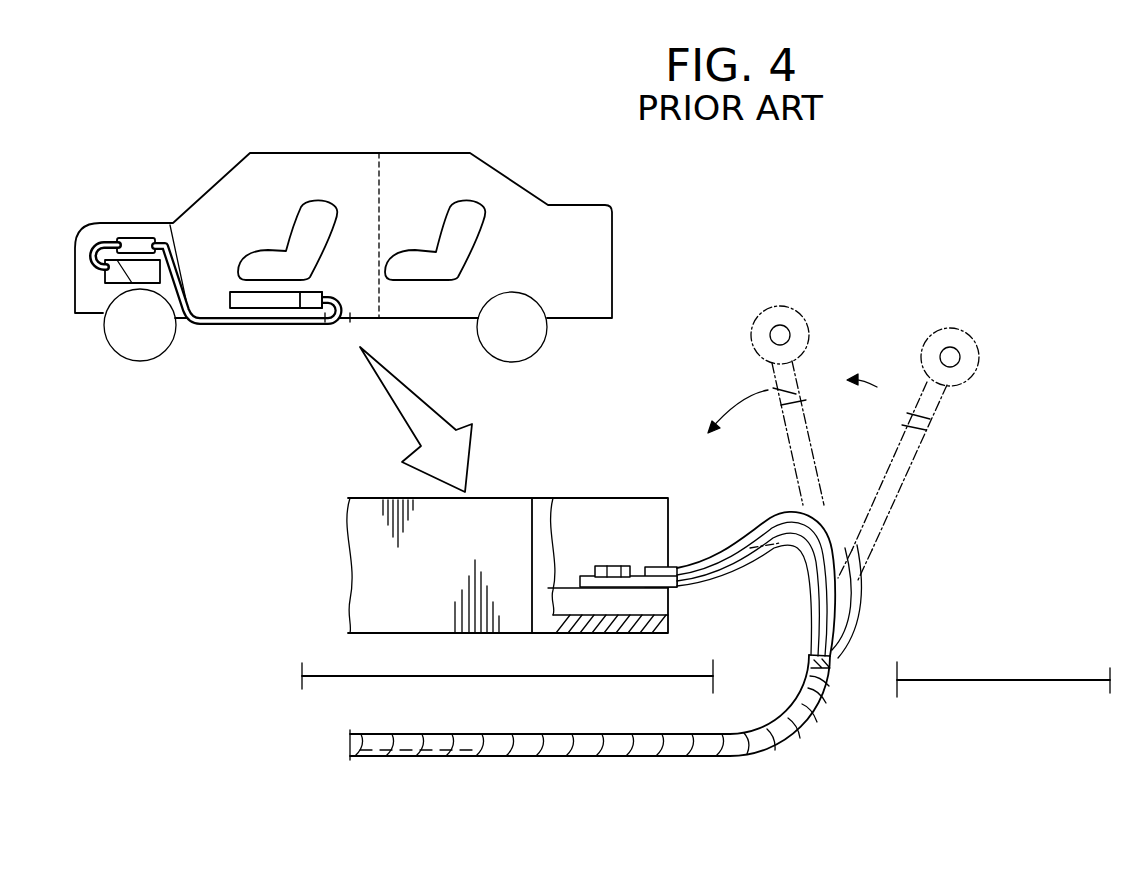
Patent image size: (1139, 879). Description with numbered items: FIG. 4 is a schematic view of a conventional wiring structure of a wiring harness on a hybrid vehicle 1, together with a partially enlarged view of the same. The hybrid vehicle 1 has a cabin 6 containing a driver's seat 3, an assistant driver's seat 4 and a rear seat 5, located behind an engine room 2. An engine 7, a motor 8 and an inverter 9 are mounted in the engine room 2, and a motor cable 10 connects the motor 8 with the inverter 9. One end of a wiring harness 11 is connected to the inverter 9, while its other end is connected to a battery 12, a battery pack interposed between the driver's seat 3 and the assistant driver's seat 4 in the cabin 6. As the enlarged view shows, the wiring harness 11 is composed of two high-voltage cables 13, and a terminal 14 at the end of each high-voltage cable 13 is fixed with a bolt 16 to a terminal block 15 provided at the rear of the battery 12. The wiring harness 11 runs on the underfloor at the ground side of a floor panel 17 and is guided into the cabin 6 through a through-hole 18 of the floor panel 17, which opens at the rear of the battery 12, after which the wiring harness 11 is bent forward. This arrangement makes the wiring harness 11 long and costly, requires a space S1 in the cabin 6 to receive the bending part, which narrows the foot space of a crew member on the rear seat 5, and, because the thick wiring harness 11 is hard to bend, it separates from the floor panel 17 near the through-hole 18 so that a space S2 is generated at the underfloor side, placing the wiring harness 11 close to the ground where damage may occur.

The hybrid vehicle 1 is at (534, 178).
The engine room 2 is at (82, 272).
The driver's seat 3 is at (322, 200).
The assistant driver's seat 4 is at (308, 181).
The rear seat 5 is at (465, 200).
The cabin 6 is at (258, 185).
The engine 7 is at (153, 284).
The motor 8 is at (117, 283).
The inverter 9 is at (137, 240).
The motor cable 10 is at (93, 240).
The wiring harness 11 is at (210, 327).
The battery 12 is at (265, 309).
The high-voltage cable 13 is at (755, 525).
The terminal 14 is at (598, 588).
The terminal block 15 is at (313, 297).
The bolt 16 is at (613, 566).
The floor panel 17 is at (405, 320).
The through-hole 18 is at (346, 322).
The space for receiving the bending part S1 is at (737, 617).
The space at the underfloor side S2 is at (655, 693).